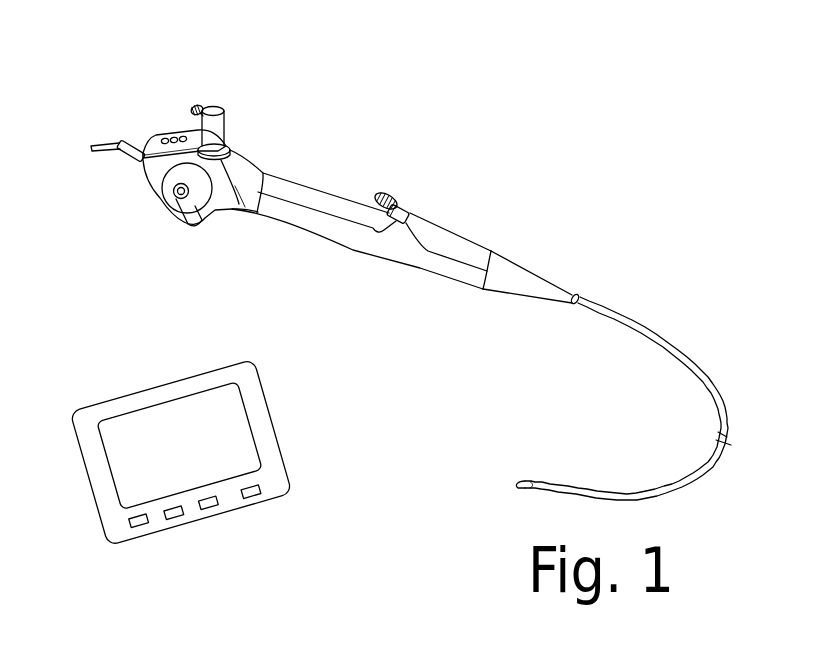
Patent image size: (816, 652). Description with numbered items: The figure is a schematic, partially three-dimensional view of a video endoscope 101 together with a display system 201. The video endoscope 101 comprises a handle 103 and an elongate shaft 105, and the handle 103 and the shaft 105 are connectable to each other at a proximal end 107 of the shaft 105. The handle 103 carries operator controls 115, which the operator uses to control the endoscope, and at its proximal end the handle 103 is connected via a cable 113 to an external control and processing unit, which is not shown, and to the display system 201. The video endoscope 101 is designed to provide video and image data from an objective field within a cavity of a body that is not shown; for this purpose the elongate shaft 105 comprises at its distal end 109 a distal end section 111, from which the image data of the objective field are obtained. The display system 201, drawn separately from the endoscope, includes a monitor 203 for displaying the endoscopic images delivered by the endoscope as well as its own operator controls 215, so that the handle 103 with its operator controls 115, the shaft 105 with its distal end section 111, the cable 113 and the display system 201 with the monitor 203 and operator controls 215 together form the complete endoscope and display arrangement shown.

The video endoscope 101 is at (349, 176).
The handle 103 is at (284, 171).
The elongate shaft 105 is at (642, 328).
The proximal end 107 is at (586, 288).
The distal end 109 is at (483, 489).
The distal end section 111 is at (522, 483).
The cable 113 is at (100, 143).
The operator controls 115 is at (172, 133).
The display system 201 is at (130, 375).
The monitor 203 is at (203, 420).
The operator controls 215 is at (168, 521).